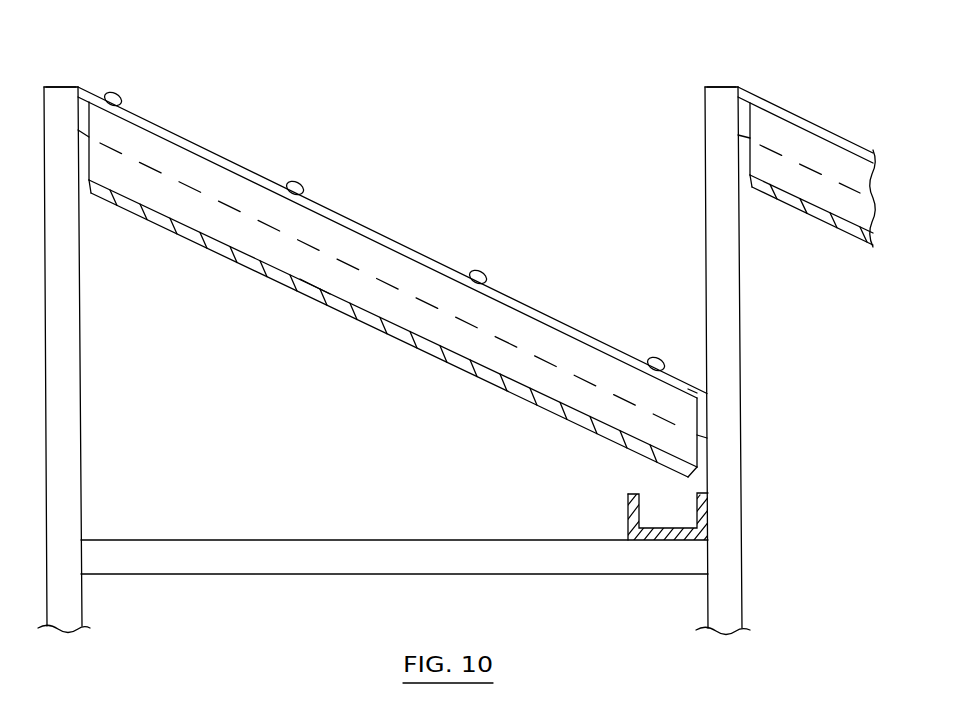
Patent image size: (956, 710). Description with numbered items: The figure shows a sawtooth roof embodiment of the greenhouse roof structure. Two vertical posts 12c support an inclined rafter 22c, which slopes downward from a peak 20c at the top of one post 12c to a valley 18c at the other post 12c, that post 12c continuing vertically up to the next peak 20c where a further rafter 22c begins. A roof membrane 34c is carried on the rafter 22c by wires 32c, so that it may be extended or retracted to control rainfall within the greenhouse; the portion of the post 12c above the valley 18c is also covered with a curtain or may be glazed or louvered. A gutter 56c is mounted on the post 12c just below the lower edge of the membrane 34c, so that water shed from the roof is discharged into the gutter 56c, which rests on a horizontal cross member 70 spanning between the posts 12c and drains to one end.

The post 12c is at (68, 389).
The peak 20c is at (62, 86).
The rafter 22c is at (185, 139).
The wires 32c is at (303, 183).
The roof membrane 34c is at (325, 290).
The horizontal cross member 70 is at (375, 550).
The gutter 56c is at (630, 516).
The valley 18c is at (688, 386).